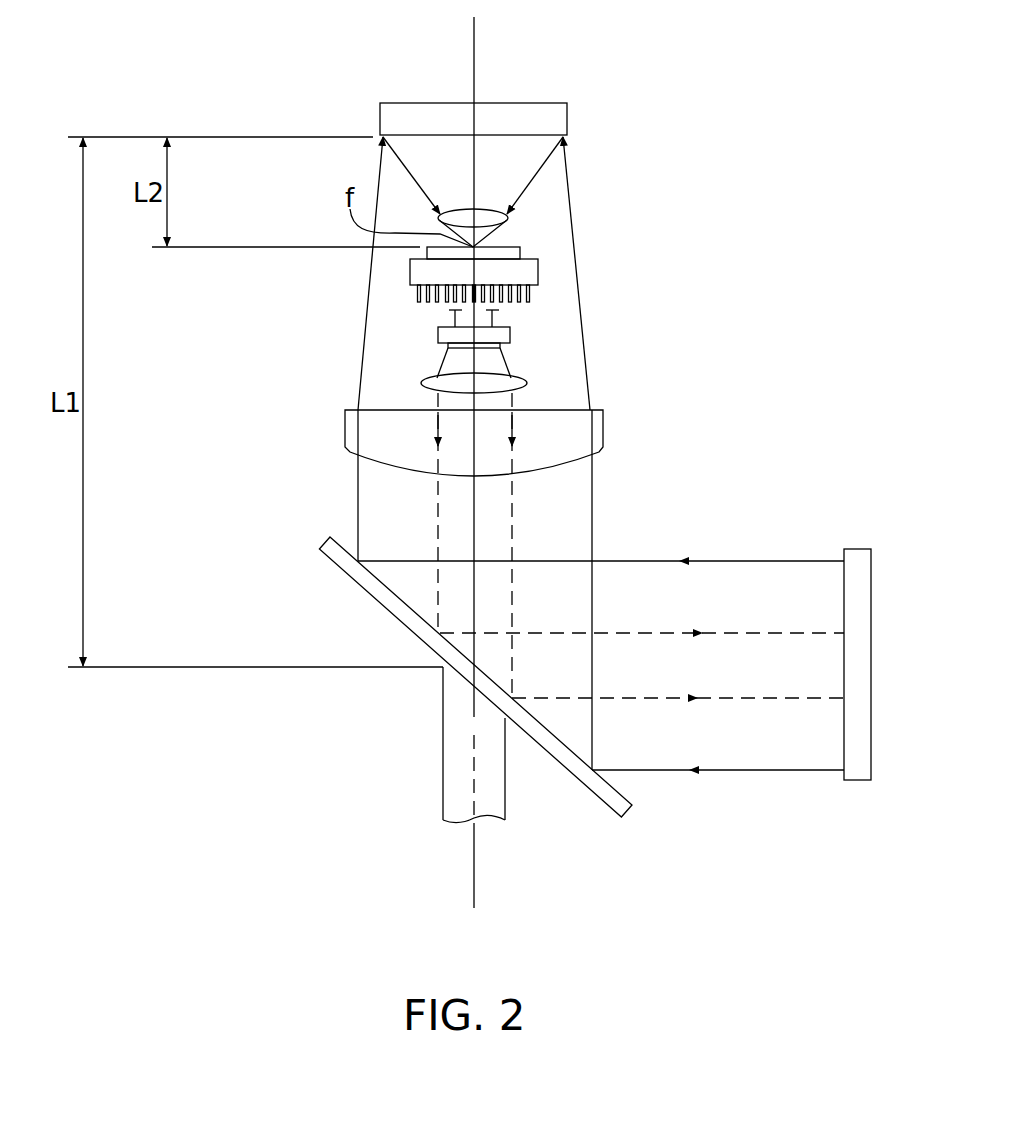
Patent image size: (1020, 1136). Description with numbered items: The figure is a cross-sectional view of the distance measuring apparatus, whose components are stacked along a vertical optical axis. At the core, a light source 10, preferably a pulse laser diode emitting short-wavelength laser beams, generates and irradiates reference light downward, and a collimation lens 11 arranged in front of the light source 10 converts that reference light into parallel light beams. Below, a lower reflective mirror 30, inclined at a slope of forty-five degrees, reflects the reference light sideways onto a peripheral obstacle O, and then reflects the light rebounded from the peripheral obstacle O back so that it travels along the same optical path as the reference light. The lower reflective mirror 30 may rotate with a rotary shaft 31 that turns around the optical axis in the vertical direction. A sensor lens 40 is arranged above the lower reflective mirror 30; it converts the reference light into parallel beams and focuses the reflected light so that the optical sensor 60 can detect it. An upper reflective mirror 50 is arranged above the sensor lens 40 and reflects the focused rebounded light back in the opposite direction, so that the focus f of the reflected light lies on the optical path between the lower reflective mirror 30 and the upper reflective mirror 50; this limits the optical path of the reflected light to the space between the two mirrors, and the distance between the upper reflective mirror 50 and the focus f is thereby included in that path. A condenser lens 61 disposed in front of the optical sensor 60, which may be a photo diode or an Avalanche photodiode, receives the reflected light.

The light source 10 is at (505, 333).
The collimation lens 11 is at (527, 381).
The lower reflective mirror 30 is at (347, 573).
The rotary shaft 31 is at (462, 785).
The sensor lens 40 is at (350, 422).
The upper reflective mirror 50 is at (528, 115).
The optical sensor 60 is at (530, 270).
The condenser lens 61 is at (493, 218).
The peripheral obstacle O is at (860, 775).